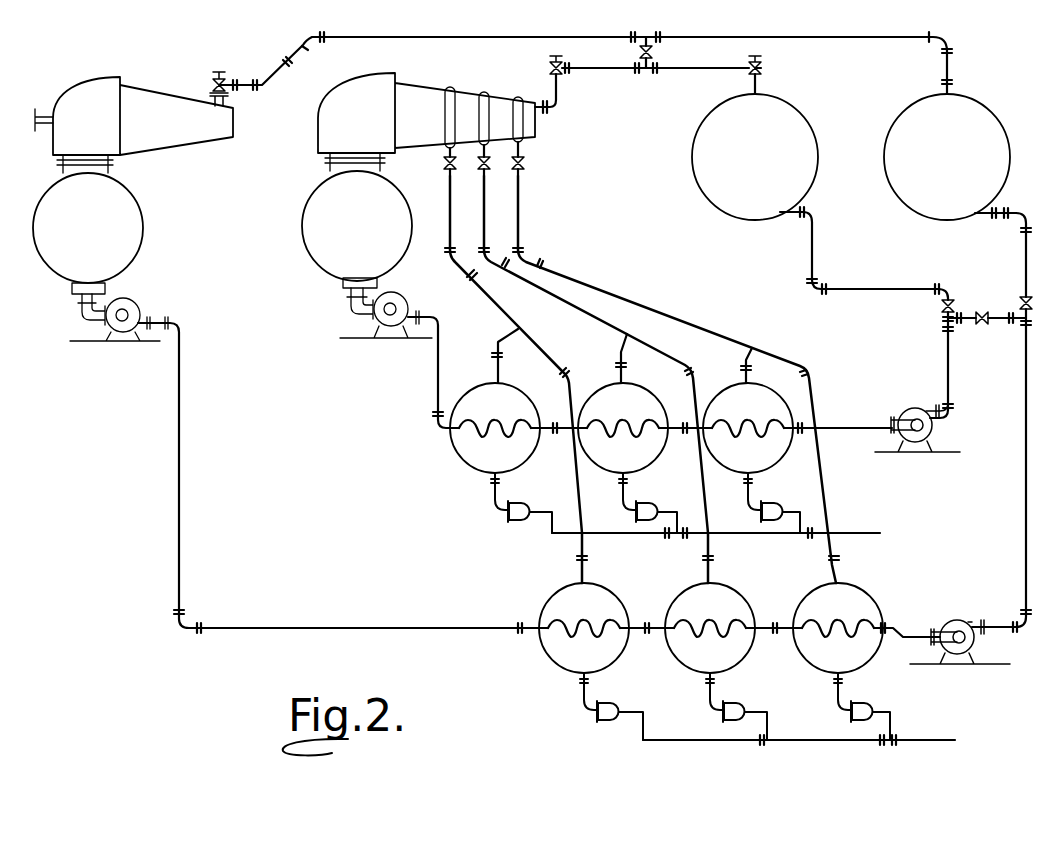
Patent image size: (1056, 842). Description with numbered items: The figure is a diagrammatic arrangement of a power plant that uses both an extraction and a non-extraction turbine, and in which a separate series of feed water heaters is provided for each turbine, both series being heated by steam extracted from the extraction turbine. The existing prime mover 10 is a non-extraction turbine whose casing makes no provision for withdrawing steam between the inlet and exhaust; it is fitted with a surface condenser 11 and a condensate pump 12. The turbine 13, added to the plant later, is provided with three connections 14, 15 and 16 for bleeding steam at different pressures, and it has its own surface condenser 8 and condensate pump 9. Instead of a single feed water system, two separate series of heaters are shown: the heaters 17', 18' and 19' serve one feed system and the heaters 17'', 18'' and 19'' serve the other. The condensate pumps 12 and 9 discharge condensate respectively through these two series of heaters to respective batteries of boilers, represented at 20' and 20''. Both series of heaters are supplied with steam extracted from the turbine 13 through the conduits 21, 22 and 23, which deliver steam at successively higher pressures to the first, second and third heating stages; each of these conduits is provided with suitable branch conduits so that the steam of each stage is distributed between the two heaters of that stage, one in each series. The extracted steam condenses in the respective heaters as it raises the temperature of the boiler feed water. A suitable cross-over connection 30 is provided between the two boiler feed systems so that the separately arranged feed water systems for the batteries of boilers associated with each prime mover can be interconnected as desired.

The surface condenser 8 is at (313, 213).
The condensate pump 9 is at (377, 323).
The prime mover 10 is at (150, 104).
The surface condenser 11 is at (128, 220).
The condensate pump 12 is at (130, 306).
The turbine 13 is at (415, 99).
The connection 14 is at (520, 151).
The connection 15 is at (486, 151).
The connection 16 is at (452, 151).
The heater 17' is at (496, 458).
The heater 18' is at (627, 458).
The heater 19' is at (751, 458).
The heater 17'' is at (591, 661).
The heater 18'' is at (716, 661).
The heater 19'' is at (840, 661).
The battery of boilers 20' is at (735, 157).
The battery of boilers 20'' is at (938, 157).
The conduit 21 is at (510, 317).
The conduit 22 is at (580, 309).
The conduit 23 is at (587, 283).
The cross-over connection 30 is at (1002, 320).